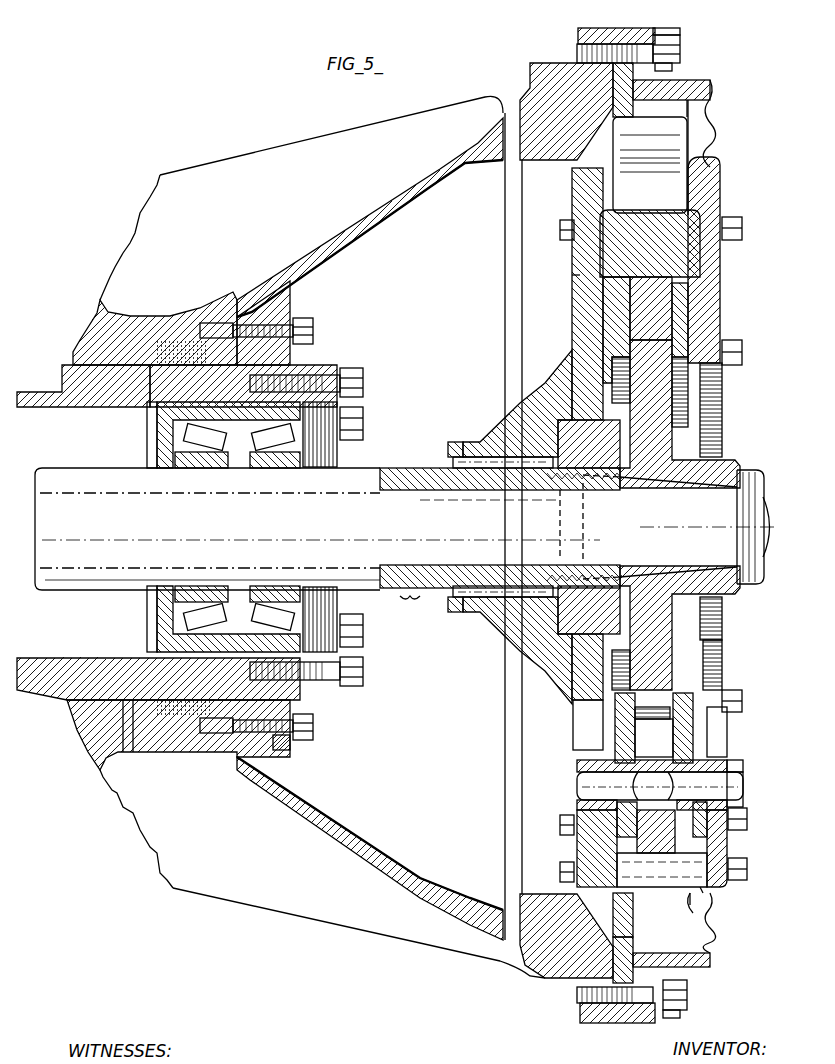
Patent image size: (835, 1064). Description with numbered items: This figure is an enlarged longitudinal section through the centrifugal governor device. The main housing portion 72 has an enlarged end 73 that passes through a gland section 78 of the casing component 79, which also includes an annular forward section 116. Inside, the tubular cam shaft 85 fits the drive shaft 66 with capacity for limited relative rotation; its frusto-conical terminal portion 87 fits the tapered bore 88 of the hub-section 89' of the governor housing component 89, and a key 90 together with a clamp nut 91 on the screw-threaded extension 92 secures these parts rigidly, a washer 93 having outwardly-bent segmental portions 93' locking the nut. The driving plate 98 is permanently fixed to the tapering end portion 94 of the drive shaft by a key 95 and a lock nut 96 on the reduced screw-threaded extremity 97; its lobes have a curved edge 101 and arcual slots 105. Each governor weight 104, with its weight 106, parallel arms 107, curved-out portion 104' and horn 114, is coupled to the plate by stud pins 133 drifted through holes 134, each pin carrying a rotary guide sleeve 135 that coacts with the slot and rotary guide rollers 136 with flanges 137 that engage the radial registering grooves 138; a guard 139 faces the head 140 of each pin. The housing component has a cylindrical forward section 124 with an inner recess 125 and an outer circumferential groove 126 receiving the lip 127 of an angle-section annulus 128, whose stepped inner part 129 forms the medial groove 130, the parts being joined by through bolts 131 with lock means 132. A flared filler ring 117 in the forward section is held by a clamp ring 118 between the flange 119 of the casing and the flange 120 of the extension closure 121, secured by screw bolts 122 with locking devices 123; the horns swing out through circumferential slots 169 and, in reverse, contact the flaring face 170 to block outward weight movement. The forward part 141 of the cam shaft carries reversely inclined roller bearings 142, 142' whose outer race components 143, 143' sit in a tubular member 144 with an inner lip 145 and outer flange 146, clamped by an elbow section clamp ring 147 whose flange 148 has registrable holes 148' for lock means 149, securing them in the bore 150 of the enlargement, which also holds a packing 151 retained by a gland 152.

The drive shaft 66 is at (413, 478).
The main housing portion 72 is at (33, 387).
The enlarged end 73 is at (68, 702).
The gland section 78 is at (158, 322).
The casing component 79 is at (362, 203).
The tubular cam shaft 85 is at (410, 609).
The frusto-conical terminal portion 87 is at (487, 490).
The tapered bore 88 is at (480, 600).
The governor housing component 89 is at (559, 270).
The hub-section 89' is at (447, 505).
The key 90 is at (482, 455).
The clamp nut 91 is at (590, 605).
The screw-threaded extension 92 is at (592, 560).
The washer 93 is at (589, 518).
The segmental portions 93' is at (550, 523).
The tapering end portion 94 is at (742, 570).
The key 95 is at (745, 470).
The lock nut 96 is at (765, 560).
The screw-threaded extremity 97 is at (770, 505).
The driving member or plate 98 is at (600, 318).
The curved edge 101 is at (672, 292).
The governor weight 104 is at (684, 236).
The curved-out portion 104' is at (606, 330).
The arcual slot 105 is at (615, 712).
The weight 106 is at (687, 138).
The parallel arms 107 is at (625, 385).
The projection or horn 114 is at (672, 130).
The annular forward section 116 is at (572, 90).
The filler ring 117 is at (633, 106).
The clamp ring 118 is at (624, 30).
The flange 119 is at (585, 36).
The flange 120 is at (660, 30).
The extension closure 121 is at (712, 92).
The screw bolts 122 is at (682, 50).
The locking devices 123 is at (674, 68).
The cylindrical forward section 124 is at (622, 905).
The inner recess 125 is at (590, 844).
The outer circumferential groove 126 is at (688, 904).
The lip 127 is at (693, 901).
The angle-section annulus 128 is at (712, 184).
The stepped inner part 129 is at (727, 850).
The medial groove 130 is at (662, 870).
The through bolts 131 is at (560, 228).
The lock means 132 is at (742, 235).
The stud pins 133 is at (580, 779).
The holes 134 is at (653, 786).
The rotary guide sleeve 135 is at (664, 728).
The rotary guide rollers 136 is at (577, 804).
The flanges 137 is at (617, 812).
The radial registering grooves 138 is at (590, 733).
The guard 139 is at (743, 766).
The head 140 is at (743, 786).
The forward part 141 is at (70, 476).
The roller bearing 142 is at (171, 524).
The roller bearing 142' is at (275, 527).
The outer race component 143 is at (207, 527).
The outer race component 143' is at (347, 527).
The tubular member 144 is at (210, 400).
The inner lip 145 is at (155, 418).
The outer flange 146 is at (315, 708).
The elbow section clamp ring 147 is at (363, 632).
The flange 148 is at (327, 684).
The registrable holes 148' is at (312, 361).
The lock means 149 is at (363, 385).
The bore 150 is at (155, 630).
The packing 151 is at (178, 712).
The gland 152 is at (258, 330).
The circumferential slots 169 is at (710, 158).
The flaring face 170 is at (548, 162).